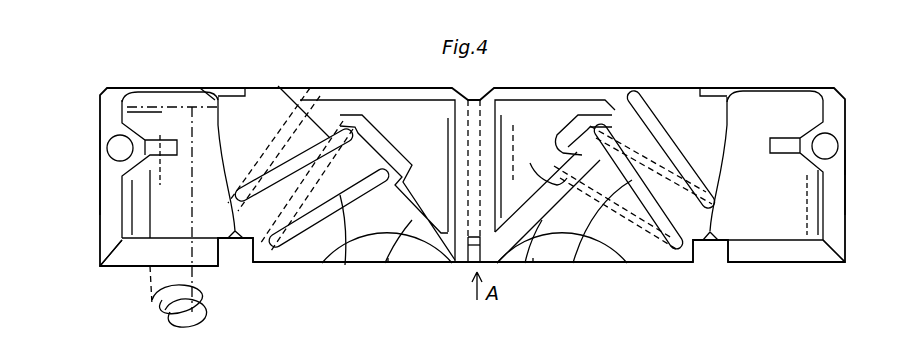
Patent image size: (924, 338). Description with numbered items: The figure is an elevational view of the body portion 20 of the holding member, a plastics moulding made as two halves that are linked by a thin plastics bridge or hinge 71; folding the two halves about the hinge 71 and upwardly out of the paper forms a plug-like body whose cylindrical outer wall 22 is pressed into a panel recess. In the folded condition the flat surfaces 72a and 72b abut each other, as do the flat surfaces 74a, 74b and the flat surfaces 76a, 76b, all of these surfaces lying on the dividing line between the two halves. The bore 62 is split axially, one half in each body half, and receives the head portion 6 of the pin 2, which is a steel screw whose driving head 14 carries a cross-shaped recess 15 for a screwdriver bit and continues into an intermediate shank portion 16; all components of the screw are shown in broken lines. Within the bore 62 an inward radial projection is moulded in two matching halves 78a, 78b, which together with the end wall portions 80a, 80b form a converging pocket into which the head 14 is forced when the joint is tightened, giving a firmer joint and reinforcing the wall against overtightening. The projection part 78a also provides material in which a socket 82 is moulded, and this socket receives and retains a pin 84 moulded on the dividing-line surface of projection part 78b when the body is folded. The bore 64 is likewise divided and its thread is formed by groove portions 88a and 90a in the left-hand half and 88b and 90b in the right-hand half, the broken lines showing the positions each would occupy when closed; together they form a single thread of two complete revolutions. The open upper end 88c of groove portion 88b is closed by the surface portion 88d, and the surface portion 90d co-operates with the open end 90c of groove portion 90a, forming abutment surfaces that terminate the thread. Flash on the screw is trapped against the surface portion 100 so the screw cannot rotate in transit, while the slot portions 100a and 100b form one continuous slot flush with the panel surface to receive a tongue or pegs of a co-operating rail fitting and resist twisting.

The pin 2 is at (143, 303).
The head portion 6 is at (147, 208).
The driving head 14 is at (205, 88).
The cross-shaped recess 15 is at (177, 84).
The intermediate shank portion 16 is at (475, 204).
The body portion 20 is at (778, 70).
The cylindrical outer wall 22 is at (100, 140).
The bore 62 is at (100, 242).
The bore 64 is at (388, 265).
The hinge 71 is at (462, 266).
The flat surface 72a is at (100, 193).
The flat surface 72b is at (833, 198).
The flat surface 74a is at (437, 118).
The flat surface 74b is at (487, 135).
The flat surface 76a is at (268, 266).
The flat surface 76b is at (682, 263).
The projection half 78a is at (156, 142).
The projection half 78b is at (785, 141).
The end wall portion 80a is at (172, 92).
The end wall portion 80b is at (747, 90).
The socket 82 is at (107, 152).
The pin 84 is at (840, 139).
The thread groove portion 88a is at (318, 120).
The thread groove portion 88b is at (268, 138).
The open upper end of groove portion 88b 88c is at (632, 88).
The surface portion 88d is at (305, 90).
The thread groove portion 90a is at (345, 267).
The thread groove portion 90b is at (312, 267).
The open end of groove portion 90a 90c is at (345, 205).
The surface portion 90d is at (542, 164).
The surface portion 100 is at (381, 150).
The slot portion 100a is at (250, 266).
The slot portion 100b is at (720, 262).